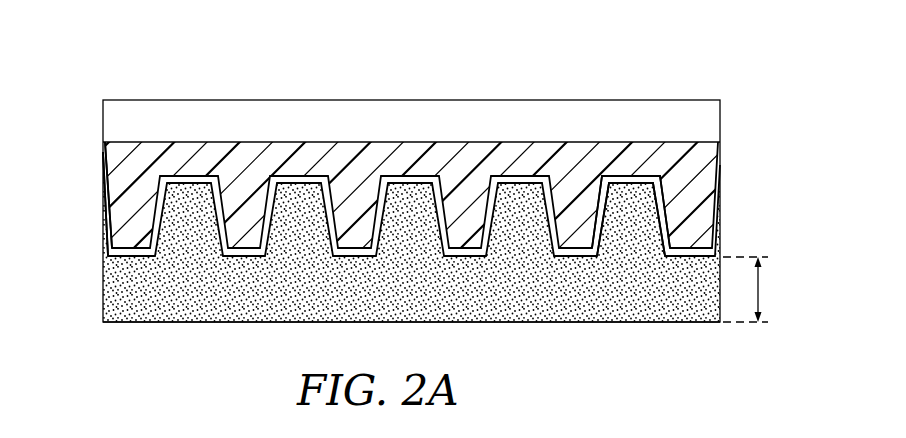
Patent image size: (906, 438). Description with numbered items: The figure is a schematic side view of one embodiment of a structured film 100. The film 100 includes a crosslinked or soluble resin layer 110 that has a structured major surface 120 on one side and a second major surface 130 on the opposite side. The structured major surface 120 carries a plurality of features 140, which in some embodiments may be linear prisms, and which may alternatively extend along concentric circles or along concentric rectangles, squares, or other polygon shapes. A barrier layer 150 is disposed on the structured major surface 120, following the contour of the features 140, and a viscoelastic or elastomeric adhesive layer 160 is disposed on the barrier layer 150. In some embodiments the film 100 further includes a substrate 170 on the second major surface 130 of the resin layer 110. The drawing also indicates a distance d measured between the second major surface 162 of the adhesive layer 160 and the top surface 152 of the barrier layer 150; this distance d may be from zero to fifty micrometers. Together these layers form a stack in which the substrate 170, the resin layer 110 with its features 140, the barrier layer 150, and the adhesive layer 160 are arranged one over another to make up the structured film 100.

The film 100 is at (705, 39).
The resin layer 110 is at (710, 163).
The structured major surface 120 is at (112, 215).
The second major surface 130 is at (122, 146).
The features 140 is at (675, 224).
The barrier layer 150 is at (719, 199).
The top surface of barrier layer 152 is at (693, 253).
The adhesive layer 160 is at (116, 296).
The second major surface 162 is at (676, 325).
The substrate 170 is at (122, 112).
The distance d is at (760, 290).